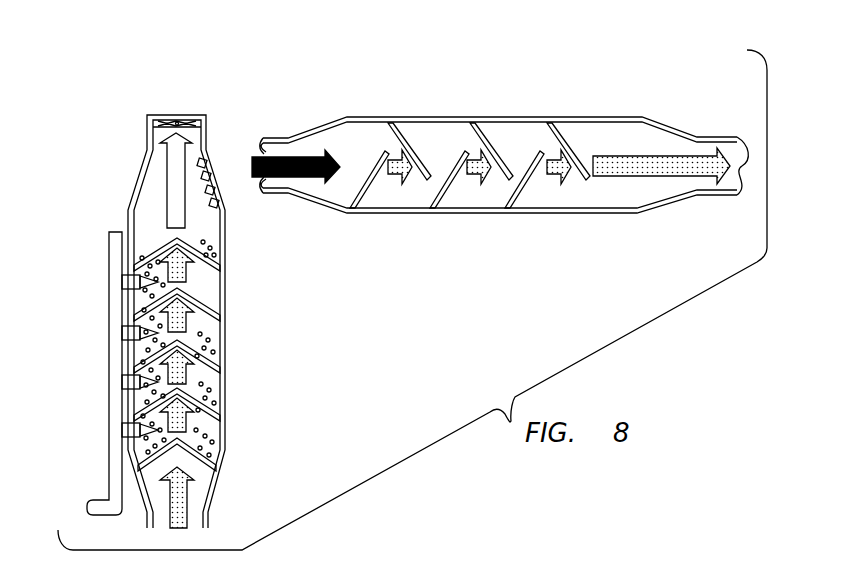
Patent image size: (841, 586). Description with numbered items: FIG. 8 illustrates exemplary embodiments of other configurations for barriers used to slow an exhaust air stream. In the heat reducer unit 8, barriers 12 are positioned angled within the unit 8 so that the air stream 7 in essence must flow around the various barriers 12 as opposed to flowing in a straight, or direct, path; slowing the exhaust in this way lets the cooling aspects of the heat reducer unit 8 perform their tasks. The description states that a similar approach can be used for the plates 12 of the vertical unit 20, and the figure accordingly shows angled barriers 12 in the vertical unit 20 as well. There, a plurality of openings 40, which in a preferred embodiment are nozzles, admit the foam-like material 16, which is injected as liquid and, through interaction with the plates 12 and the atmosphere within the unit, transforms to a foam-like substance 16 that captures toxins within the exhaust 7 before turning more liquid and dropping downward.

The air stream 7 is at (167, 210).
The heat reducer unit 8 is at (318, 122).
The barriers 12 is at (200, 301).
The foam-like material 16 is at (207, 389).
The vertical unit 20 is at (143, 168).
The openings 40 is at (150, 307).